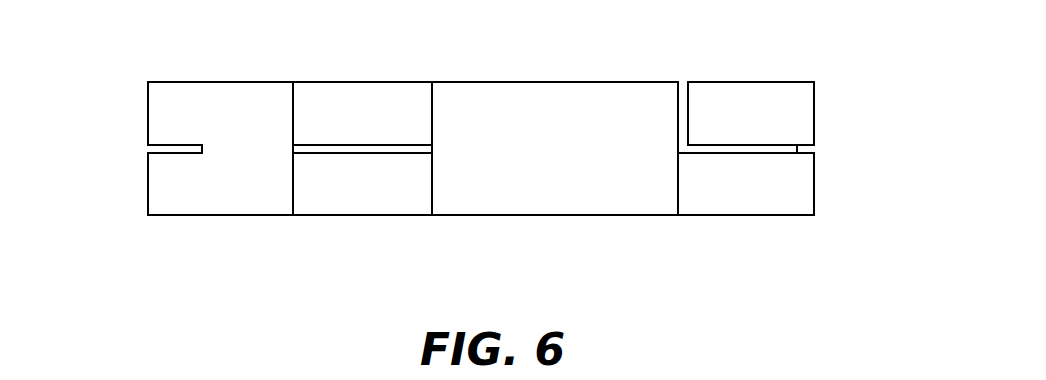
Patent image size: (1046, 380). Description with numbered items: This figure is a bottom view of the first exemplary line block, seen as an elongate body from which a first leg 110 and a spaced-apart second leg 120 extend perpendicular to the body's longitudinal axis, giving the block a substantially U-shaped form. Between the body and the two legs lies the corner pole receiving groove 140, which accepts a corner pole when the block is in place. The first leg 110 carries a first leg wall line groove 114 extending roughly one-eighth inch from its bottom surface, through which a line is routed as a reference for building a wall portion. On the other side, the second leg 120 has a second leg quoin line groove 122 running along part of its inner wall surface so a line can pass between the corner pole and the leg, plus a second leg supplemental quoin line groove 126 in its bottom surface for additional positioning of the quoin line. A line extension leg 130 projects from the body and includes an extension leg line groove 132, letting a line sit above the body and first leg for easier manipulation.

The first leg 110 is at (343, 142).
The first leg wall line groove 114 is at (344, 156).
The second leg 120 is at (818, 104).
The second leg quoin line groove 122 is at (683, 78).
The second leg supplemental quoin line groove 126 is at (774, 157).
The line extension leg 130 is at (177, 111).
The extension leg line groove 132 is at (146, 147).
The corner pole receiving groove 140 is at (559, 96).